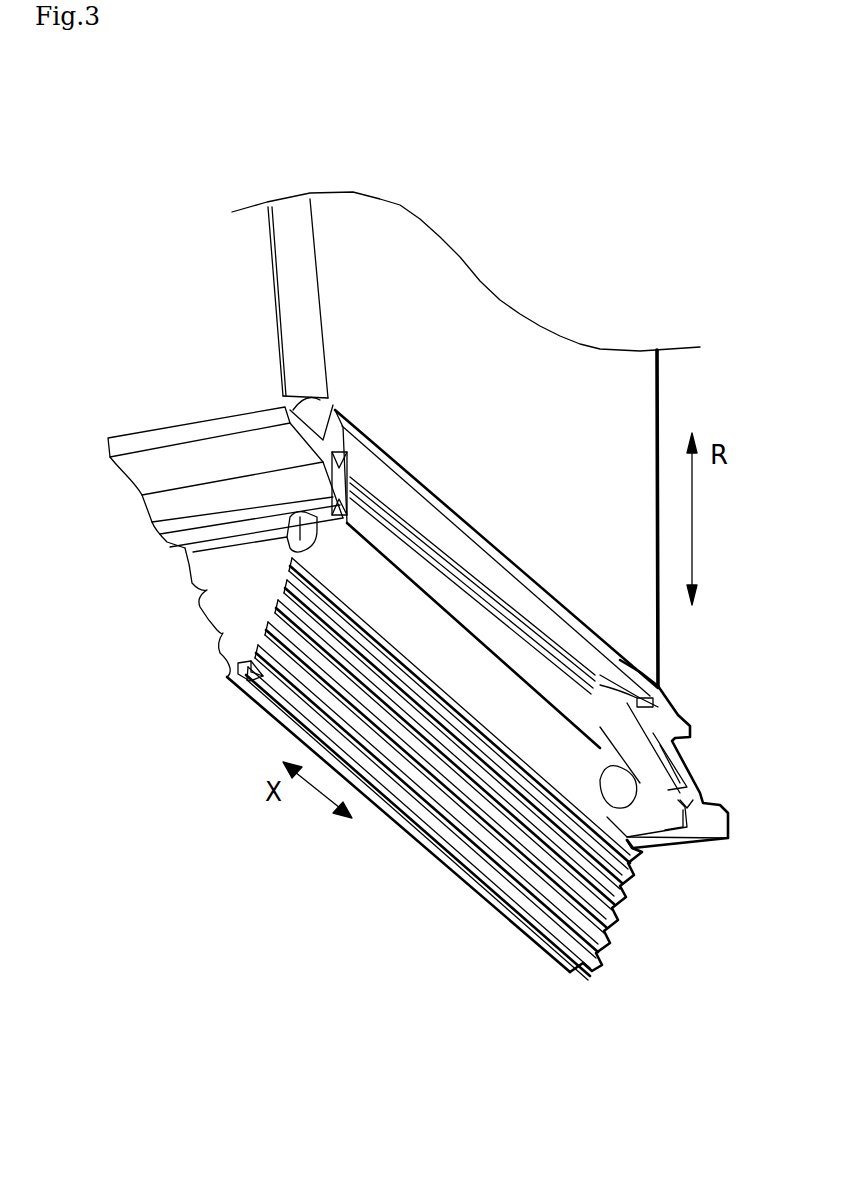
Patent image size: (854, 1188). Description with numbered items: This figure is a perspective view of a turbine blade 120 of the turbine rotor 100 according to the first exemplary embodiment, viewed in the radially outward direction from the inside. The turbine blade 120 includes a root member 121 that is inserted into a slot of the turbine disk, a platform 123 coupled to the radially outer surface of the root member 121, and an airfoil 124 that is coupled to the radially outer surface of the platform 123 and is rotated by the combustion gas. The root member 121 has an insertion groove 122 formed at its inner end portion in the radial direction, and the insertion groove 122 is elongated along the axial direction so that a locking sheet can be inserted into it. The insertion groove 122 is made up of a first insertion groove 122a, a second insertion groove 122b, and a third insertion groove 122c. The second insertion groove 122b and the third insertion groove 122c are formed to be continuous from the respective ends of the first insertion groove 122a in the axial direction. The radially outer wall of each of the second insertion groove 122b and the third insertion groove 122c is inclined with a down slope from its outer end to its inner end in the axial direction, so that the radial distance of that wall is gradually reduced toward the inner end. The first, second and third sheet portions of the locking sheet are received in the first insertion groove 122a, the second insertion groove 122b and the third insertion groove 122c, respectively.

The turbine rotor 100 is at (172, 113).
The turbine blade 120 is at (141, 346).
The root member 121 is at (233, 606).
The insertion groove 122 is at (450, 876).
The first insertion groove 122a is at (422, 826).
The second insertion groove 122b is at (253, 700).
The third insertion groove 122c is at (550, 936).
The platform 123 is at (668, 722).
The airfoil 124 is at (290, 264).